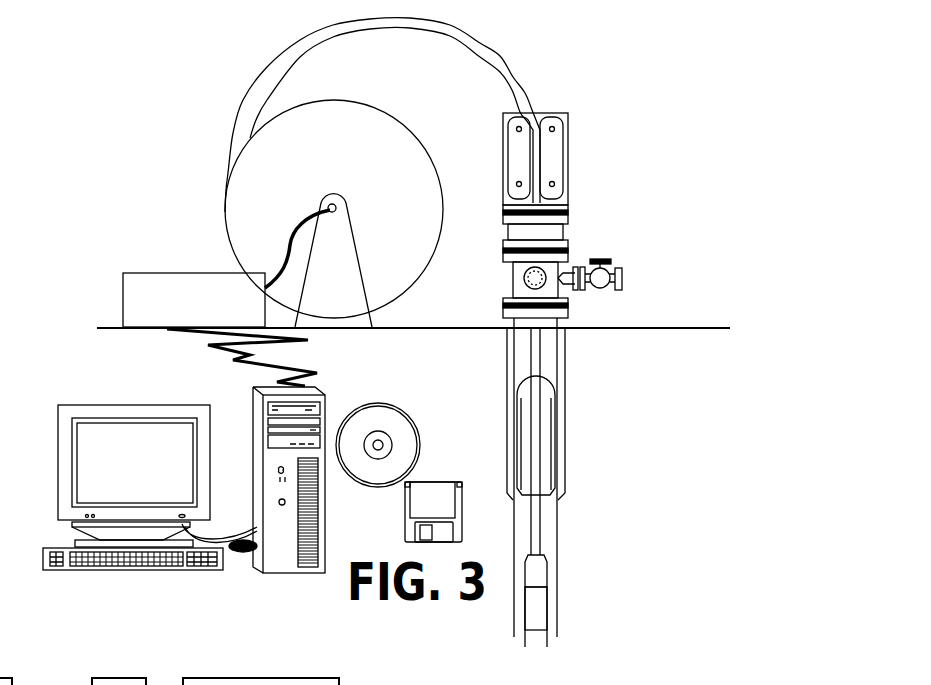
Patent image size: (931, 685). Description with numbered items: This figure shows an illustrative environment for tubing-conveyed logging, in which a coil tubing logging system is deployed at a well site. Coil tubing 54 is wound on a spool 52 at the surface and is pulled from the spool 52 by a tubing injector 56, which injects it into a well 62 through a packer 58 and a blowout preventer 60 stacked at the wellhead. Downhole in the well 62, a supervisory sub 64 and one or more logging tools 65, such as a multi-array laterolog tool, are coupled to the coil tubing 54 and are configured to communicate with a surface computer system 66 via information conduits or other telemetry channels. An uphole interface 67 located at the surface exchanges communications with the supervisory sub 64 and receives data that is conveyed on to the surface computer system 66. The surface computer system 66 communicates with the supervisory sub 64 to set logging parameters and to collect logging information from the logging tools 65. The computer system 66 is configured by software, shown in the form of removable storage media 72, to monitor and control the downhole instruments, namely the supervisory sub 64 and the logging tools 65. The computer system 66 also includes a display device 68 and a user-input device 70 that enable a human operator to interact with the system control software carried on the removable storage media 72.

The spool 52 is at (333, 171).
The coil tubing 54 is at (272, 75).
The tubing injector 56 is at (563, 143).
The packer 58 is at (565, 228).
The blowout preventer 60 is at (511, 278).
The well 62 is at (562, 370).
The supervisory sub 64 is at (548, 572).
The logging tools 65 is at (548, 613).
The surface computer system 66 is at (256, 490).
The uphole interface 67 is at (167, 272).
The display device 68 is at (67, 522).
The user-input device 70 is at (65, 571).
The removable storage media 72 is at (404, 495).